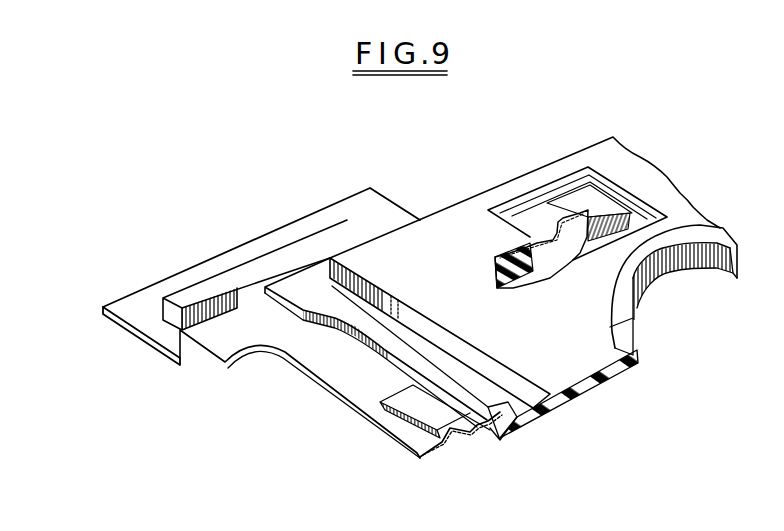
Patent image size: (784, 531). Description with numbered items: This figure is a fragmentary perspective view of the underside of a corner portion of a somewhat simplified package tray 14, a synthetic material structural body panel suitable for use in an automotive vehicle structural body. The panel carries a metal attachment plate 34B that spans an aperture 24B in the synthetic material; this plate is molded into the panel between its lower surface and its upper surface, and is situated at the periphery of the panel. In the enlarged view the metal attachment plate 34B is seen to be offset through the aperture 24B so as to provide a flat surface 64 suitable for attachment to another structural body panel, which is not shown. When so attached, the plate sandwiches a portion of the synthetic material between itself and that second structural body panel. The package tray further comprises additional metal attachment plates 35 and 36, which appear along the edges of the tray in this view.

The package tray 14 is at (636, 358).
The aperture 24B is at (646, 210).
The metal attachment plate 34B is at (558, 203).
The metal attachment plate 35 is at (183, 290).
The metal attachment plate 36 is at (360, 417).
The flat surface 64 is at (590, 198).